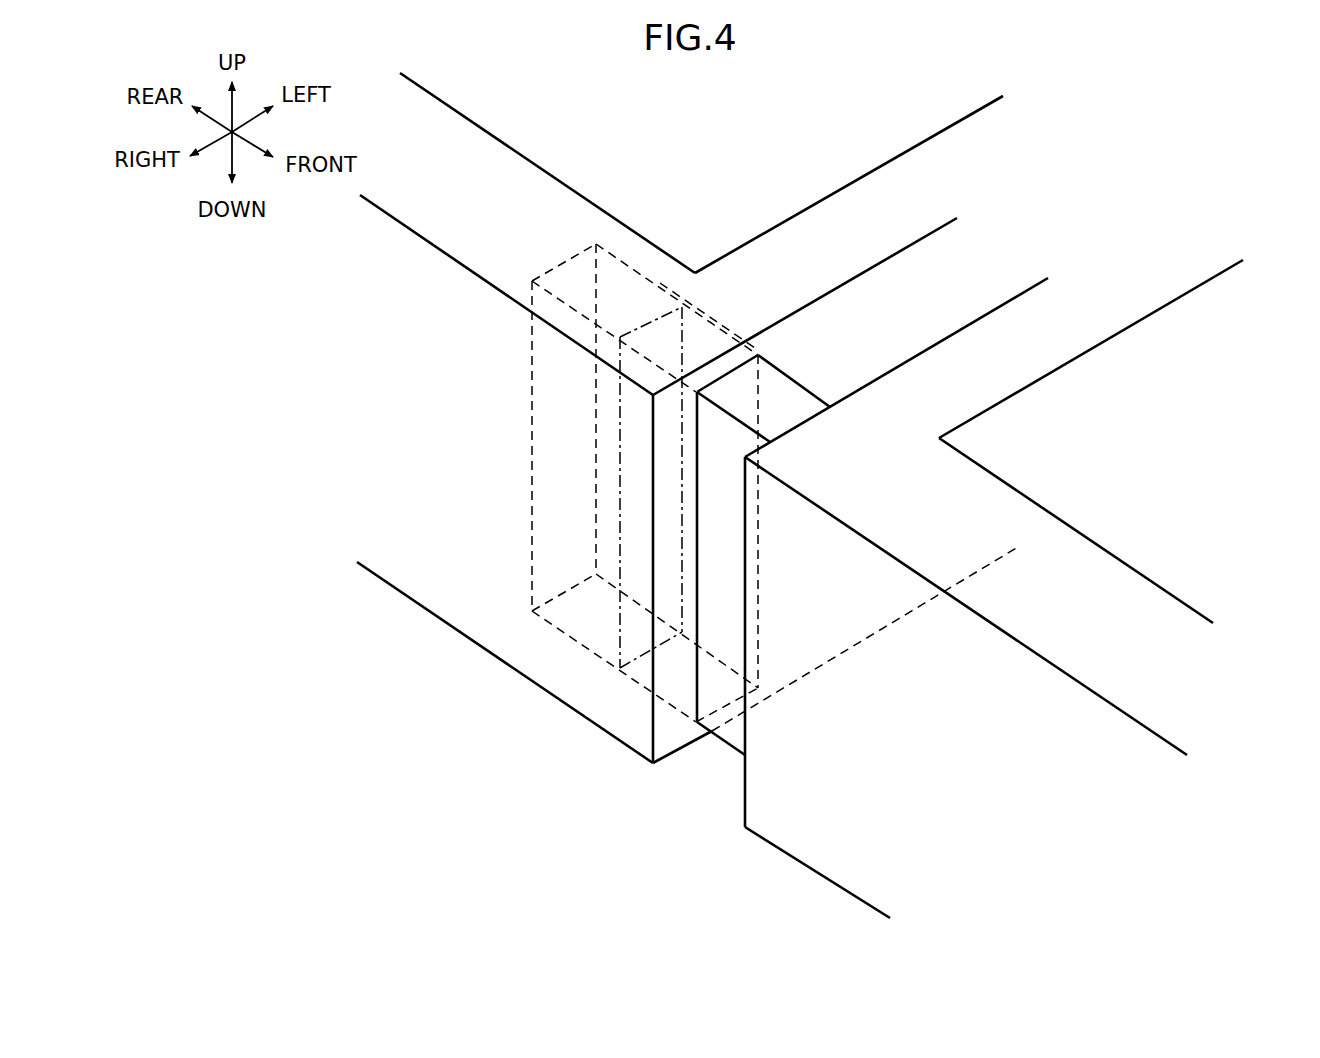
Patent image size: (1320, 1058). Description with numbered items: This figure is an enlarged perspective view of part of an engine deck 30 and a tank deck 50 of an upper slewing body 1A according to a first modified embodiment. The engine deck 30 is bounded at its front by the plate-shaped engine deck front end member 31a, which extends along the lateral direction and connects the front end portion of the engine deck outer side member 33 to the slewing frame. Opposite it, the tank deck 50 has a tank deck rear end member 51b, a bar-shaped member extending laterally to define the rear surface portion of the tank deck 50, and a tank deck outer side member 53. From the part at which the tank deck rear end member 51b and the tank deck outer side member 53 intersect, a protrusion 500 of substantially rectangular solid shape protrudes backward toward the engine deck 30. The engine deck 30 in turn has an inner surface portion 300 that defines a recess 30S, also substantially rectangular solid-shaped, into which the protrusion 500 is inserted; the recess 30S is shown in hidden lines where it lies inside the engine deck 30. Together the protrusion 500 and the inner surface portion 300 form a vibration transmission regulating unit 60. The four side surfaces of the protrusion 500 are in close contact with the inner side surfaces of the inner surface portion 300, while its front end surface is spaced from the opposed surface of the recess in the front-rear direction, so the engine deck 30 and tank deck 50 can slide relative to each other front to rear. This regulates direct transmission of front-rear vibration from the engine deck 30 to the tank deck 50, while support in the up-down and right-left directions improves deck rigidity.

The upper slewing body 1A is at (1196, 114).
The engine deck 30 is at (410, 552).
The recess 30S is at (622, 310).
The engine deck front end member 31a is at (858, 200).
The engine deck outer side member 33 is at (430, 120).
The tank deck 50 is at (818, 830).
The tank deck rear end member 51b is at (1020, 358).
The tank deck outer side member 53 is at (1108, 595).
The vibration transmission regulating unit 60 is at (722, 308).
The inner surface portion 300 is at (563, 285).
The protrusion 500 is at (788, 400).